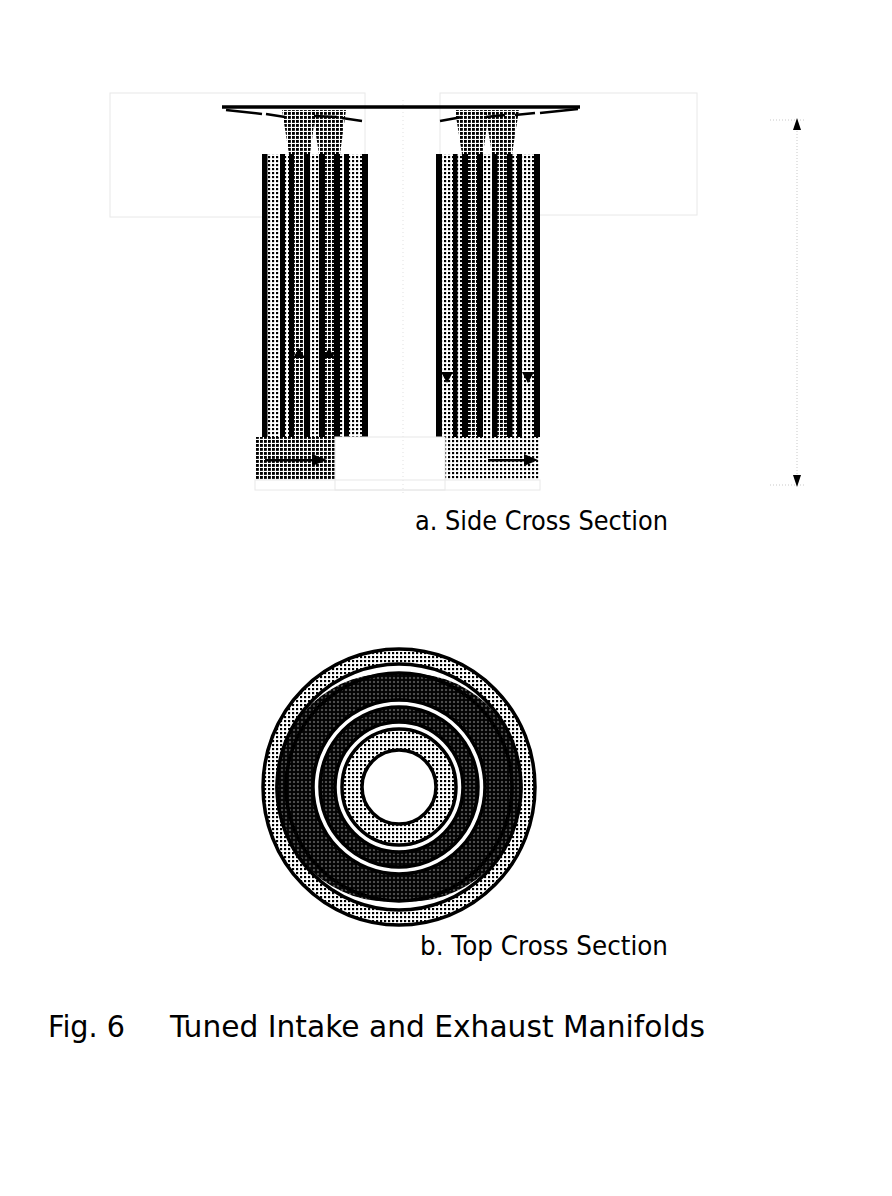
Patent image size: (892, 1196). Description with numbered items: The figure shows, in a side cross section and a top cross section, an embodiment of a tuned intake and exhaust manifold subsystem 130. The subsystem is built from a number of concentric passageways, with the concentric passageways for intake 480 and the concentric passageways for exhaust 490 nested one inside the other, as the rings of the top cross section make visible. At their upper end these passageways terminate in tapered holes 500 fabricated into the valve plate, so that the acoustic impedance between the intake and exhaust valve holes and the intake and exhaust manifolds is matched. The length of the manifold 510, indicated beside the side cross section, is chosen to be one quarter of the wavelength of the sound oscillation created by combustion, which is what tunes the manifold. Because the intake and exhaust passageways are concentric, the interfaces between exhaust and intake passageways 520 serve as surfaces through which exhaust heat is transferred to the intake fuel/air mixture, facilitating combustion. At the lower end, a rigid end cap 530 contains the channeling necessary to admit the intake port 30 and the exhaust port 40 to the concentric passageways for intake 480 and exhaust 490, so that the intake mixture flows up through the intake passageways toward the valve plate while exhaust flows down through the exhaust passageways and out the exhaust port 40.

The tapered holes 500 is at (250, 105).
The concentric passageways for intake 480 is at (262, 300).
The concentric passageways for exhaust 490 is at (548, 325).
The tuned intake and exhaust manifold subsystem 130 is at (585, 205).
The length of the manifold 510 is at (784, 302).
The intake port 30 is at (255, 455).
The exhaust port 40 is at (545, 440).
The rigid end cap 530 is at (340, 482).
The interfaces between exhaust and intake passageways 520 is at (510, 905).